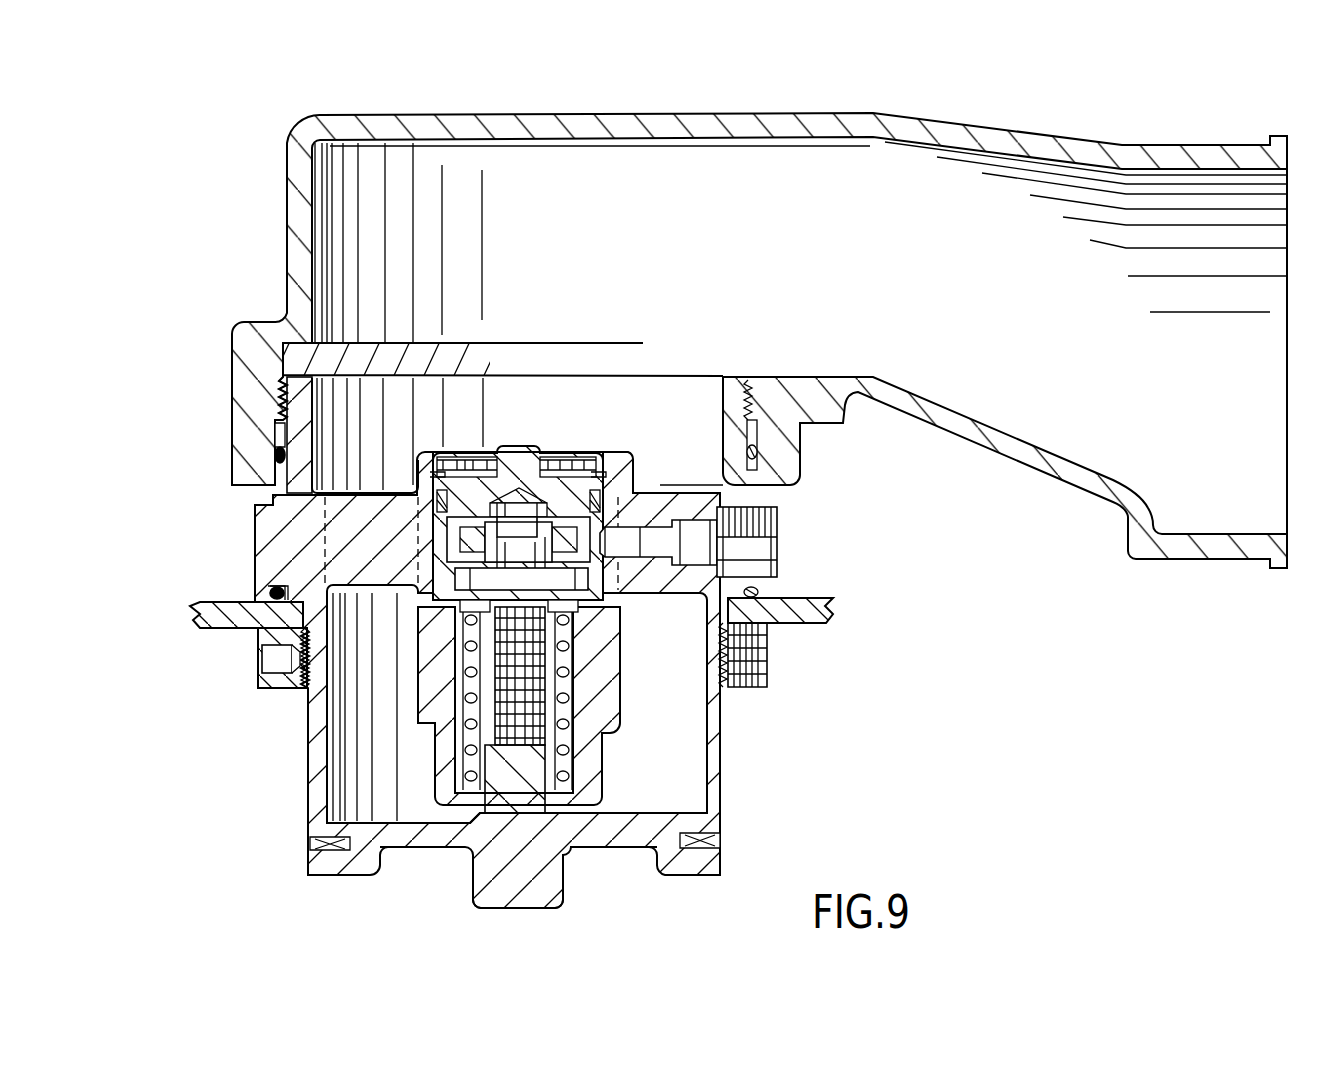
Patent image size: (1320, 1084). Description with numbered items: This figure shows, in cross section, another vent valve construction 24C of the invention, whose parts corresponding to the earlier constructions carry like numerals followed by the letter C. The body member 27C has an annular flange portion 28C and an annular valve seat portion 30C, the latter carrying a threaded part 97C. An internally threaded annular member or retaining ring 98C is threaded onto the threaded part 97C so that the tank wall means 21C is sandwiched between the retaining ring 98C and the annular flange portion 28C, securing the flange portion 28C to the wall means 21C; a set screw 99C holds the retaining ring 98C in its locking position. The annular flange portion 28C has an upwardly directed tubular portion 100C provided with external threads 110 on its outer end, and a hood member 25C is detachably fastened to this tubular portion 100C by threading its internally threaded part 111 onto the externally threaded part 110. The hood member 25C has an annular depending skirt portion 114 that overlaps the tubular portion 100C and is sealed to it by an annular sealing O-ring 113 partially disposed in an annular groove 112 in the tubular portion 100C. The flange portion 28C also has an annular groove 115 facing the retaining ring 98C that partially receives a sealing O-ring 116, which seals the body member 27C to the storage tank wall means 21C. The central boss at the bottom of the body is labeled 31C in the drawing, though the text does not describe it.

The hood member 25C is at (808, 113).
The vent valve construction 24C is at (814, 550).
The body member 27C is at (717, 750).
The annular flange portion 28C is at (265, 527).
The tank wall means 21C is at (200, 612).
The annular valve seat portion 30C is at (718, 817).
The boss 31C is at (628, 834).
The threaded part 97C is at (300, 690).
The retaining ring 98C is at (263, 688).
The set screw 99C is at (745, 672).
The tubular portion 100C is at (302, 426).
The external threads 110 is at (283, 393).
The internally threaded part 111 is at (287, 407).
The annular groove 112 is at (287, 453).
The sealing O-ring 113 is at (273, 458).
The annular depending skirt portion 114 is at (240, 475).
The annular groove 115 is at (272, 600).
The sealing O-ring 116 is at (277, 592).